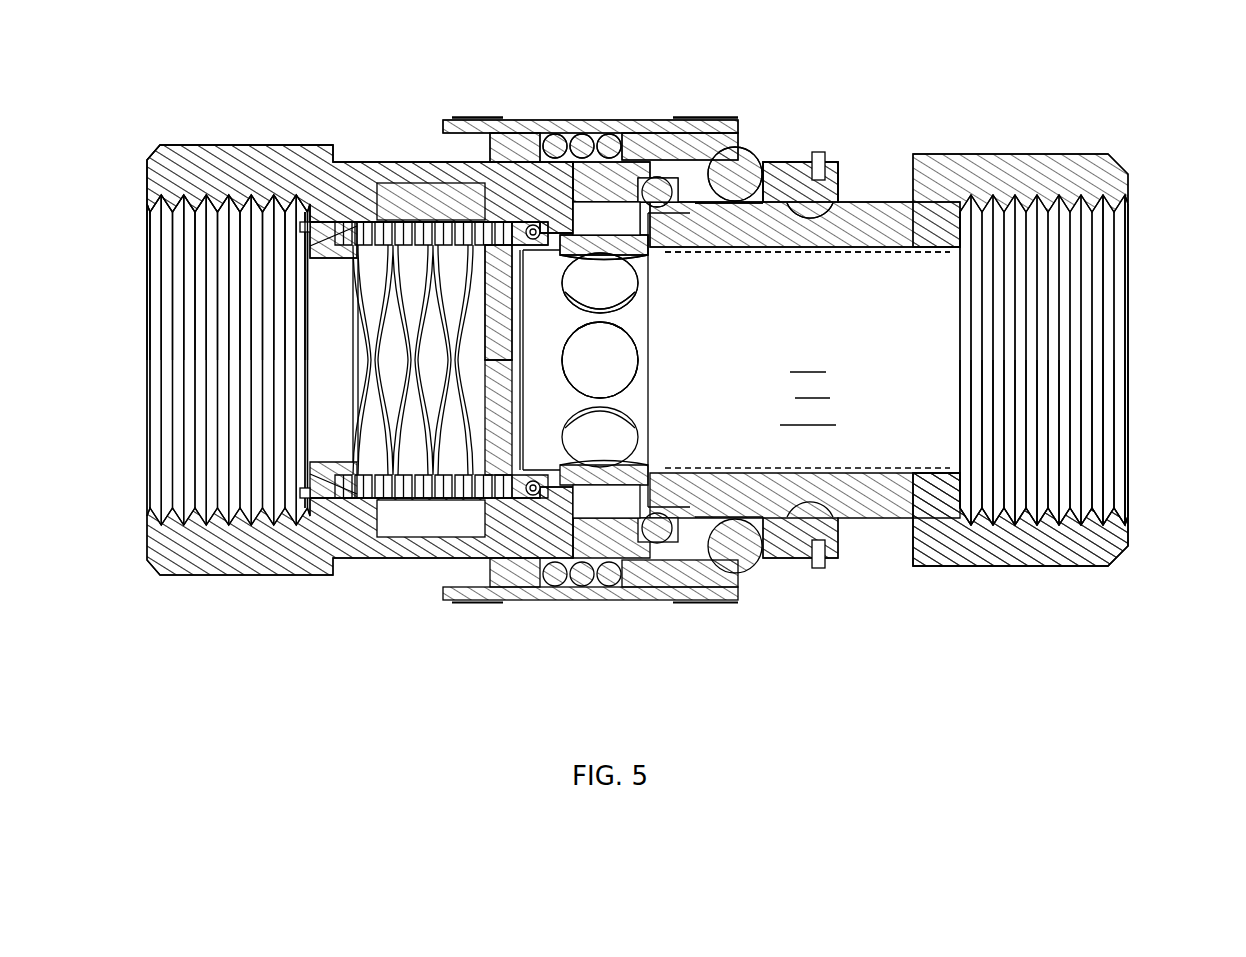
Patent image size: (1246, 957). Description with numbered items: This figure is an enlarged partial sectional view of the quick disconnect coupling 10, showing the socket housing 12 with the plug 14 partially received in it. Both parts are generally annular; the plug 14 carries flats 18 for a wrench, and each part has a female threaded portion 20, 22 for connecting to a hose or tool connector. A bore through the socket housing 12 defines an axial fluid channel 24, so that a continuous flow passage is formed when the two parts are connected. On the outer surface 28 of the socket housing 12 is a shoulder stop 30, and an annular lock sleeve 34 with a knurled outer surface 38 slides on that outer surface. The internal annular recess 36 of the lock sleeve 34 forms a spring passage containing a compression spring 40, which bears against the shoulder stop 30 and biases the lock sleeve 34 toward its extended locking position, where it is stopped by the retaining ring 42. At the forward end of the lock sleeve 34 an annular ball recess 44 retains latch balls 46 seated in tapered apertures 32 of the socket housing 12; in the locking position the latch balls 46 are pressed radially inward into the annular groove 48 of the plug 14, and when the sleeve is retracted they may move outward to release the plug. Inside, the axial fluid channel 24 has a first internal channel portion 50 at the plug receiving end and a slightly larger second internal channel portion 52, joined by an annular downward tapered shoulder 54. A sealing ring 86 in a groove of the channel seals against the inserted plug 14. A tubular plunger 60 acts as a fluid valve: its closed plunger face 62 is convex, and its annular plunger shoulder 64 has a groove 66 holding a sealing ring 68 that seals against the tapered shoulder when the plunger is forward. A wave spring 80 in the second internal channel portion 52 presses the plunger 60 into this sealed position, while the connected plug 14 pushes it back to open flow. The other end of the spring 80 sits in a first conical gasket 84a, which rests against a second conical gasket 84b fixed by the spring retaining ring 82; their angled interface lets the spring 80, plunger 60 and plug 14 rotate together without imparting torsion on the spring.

The quick disconnect coupling 10 is at (825, 91).
The socket housing 12 is at (287, 137).
The plug 14 is at (1045, 160).
The flats 18 is at (1060, 563).
The female threaded portion 20 is at (147, 500).
The female threaded portion 22 is at (1118, 220).
The axial fluid channel 24 is at (1135, 354).
The outer surface 28 is at (785, 160).
The shoulder stop 30 is at (537, 140).
The apertures 32 is at (772, 556).
The lock sleeve 34 is at (641, 118).
The internal annular recess 36 is at (600, 134).
The knurled outer surface 38 is at (487, 118).
The spring 40 is at (595, 578).
The retaining ring 42 is at (824, 567).
The annular ball recess 44 is at (742, 148).
The latch balls 46 is at (700, 575).
The annular groove 48 is at (818, 213).
The first internal channel portion 50 is at (598, 215).
The second internal channel portion 52 is at (417, 190).
The annular downward tapered shoulder 54 is at (463, 222).
The plunger 60 is at (560, 487).
The plunger face 62 is at (433, 510).
The annular plunger shoulder 64 is at (507, 397).
The groove 66 is at (535, 240).
The sealing ring 68 is at (542, 410).
The spring 80 is at (410, 503).
The spring retaining ring 82 is at (305, 215).
The first conical gasket 84a is at (311, 243).
The second conical gasket 84b is at (307, 215).
The sealing ring 86 is at (652, 538).